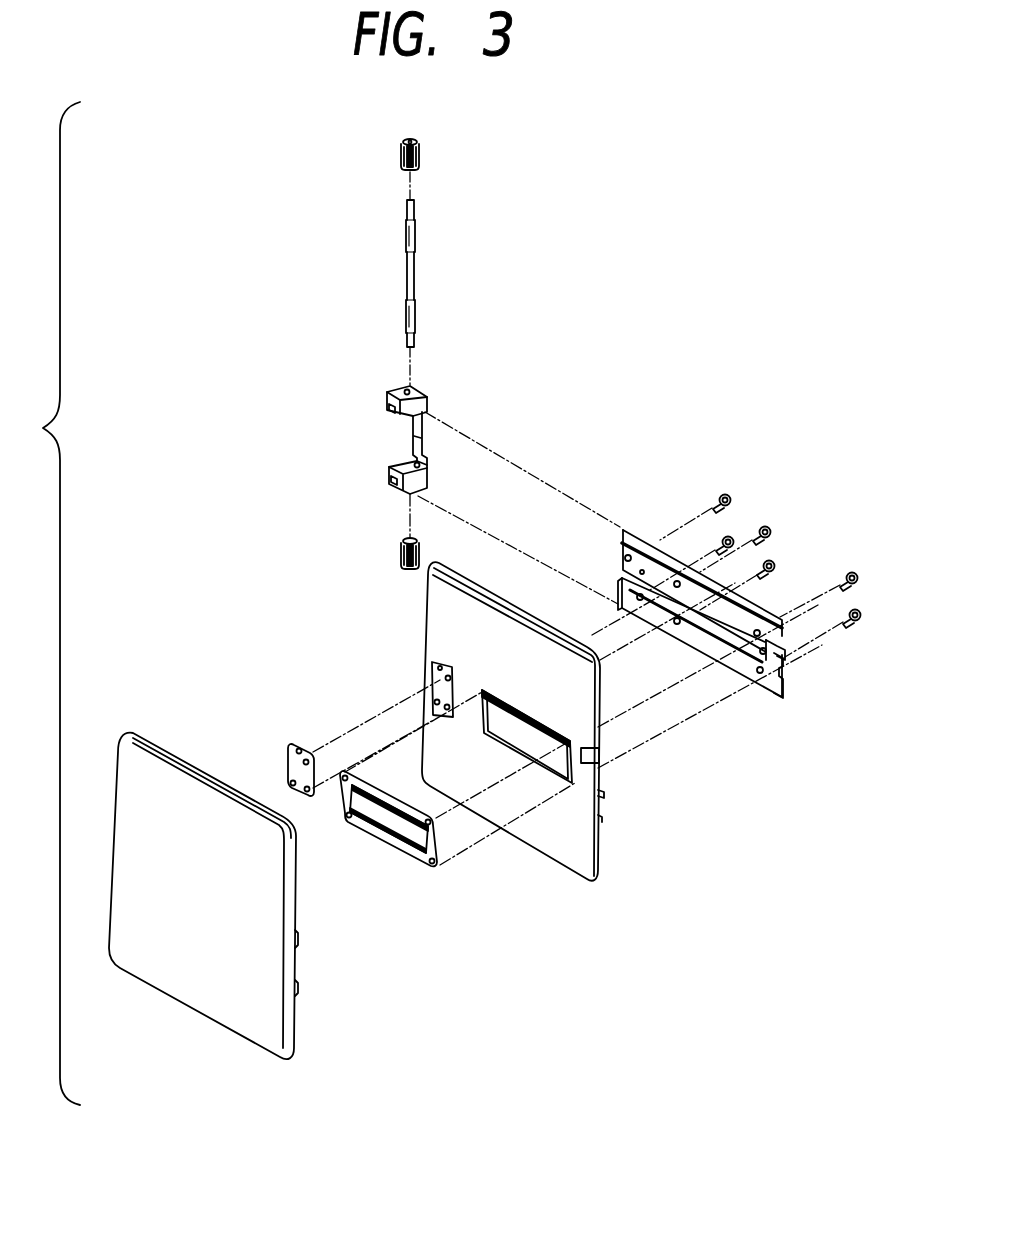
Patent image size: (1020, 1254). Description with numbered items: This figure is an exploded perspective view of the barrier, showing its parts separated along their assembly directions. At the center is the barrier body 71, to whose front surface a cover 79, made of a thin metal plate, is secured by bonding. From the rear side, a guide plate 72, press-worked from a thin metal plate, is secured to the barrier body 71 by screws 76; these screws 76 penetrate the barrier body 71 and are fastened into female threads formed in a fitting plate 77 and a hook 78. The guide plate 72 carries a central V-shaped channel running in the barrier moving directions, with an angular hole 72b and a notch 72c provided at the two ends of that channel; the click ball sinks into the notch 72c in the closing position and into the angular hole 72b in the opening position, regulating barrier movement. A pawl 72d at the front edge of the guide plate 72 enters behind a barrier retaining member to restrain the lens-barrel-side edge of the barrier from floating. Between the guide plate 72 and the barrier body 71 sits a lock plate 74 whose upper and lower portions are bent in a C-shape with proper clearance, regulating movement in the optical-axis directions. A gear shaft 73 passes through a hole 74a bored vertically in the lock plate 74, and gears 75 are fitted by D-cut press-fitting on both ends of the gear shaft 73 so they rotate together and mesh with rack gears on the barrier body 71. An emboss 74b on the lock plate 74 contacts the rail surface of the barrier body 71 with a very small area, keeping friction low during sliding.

The barrier body 71 is at (562, 850).
The guide plate 72 is at (705, 649).
The angular hole 72b is at (783, 648).
The notch 72c is at (614, 580).
The pawl 72d is at (786, 666).
The gear shaft 73 is at (415, 235).
The lock plate 74 is at (391, 413).
The hole 74a is at (405, 389).
The emboss 74b is at (388, 409).
The gears 75 is at (424, 150).
The screws 76 is at (876, 571).
The fitting plate 77 is at (389, 845).
The hook 78 is at (292, 745).
The cover 79 is at (212, 1013).